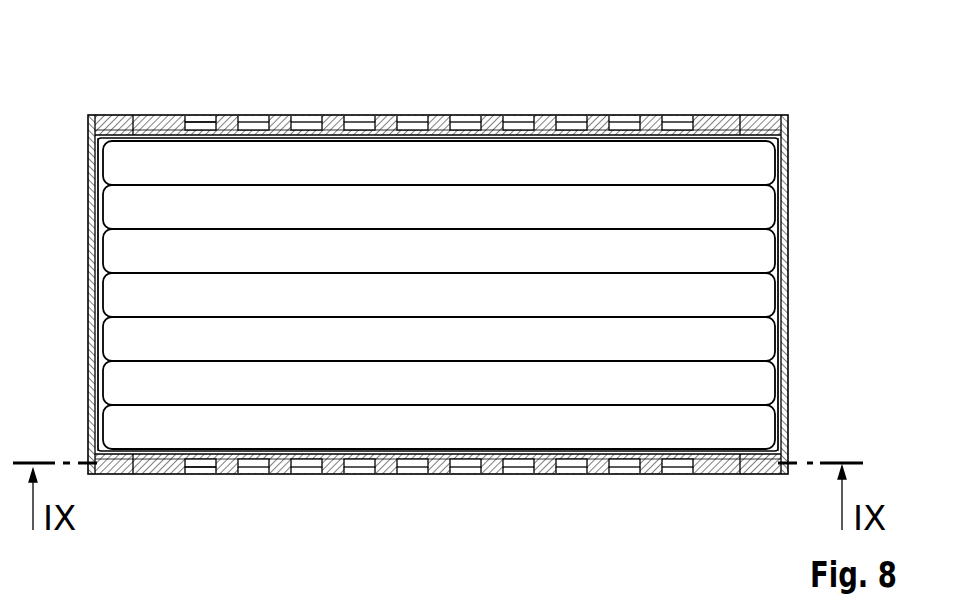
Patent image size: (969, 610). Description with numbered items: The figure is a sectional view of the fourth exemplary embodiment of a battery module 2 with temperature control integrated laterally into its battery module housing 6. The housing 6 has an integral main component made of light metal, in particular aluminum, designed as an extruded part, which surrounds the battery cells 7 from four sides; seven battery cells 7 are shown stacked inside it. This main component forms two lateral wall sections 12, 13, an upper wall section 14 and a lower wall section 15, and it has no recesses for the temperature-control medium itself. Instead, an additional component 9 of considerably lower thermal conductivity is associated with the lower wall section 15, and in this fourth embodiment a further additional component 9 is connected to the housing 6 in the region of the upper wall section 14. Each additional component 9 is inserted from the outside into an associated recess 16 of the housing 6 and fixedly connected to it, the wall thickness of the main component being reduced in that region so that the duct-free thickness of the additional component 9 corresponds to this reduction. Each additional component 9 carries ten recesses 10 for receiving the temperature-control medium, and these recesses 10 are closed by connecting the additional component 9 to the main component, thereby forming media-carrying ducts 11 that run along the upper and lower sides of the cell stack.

The battery module 2 is at (846, 75).
The battery module housing 6 is at (776, 84).
The battery cells 7 is at (760, 163).
The additional component 9 is at (720, 106).
The recesses 10 is at (250, 120).
The media-carrying ducts 11 is at (205, 475).
The lateral wall section 12 is at (90, 288).
The lateral wall section 13 is at (787, 315).
The upper wall section 14 is at (128, 116).
The lower wall section 15 is at (130, 473).
The recess 16 is at (193, 120).